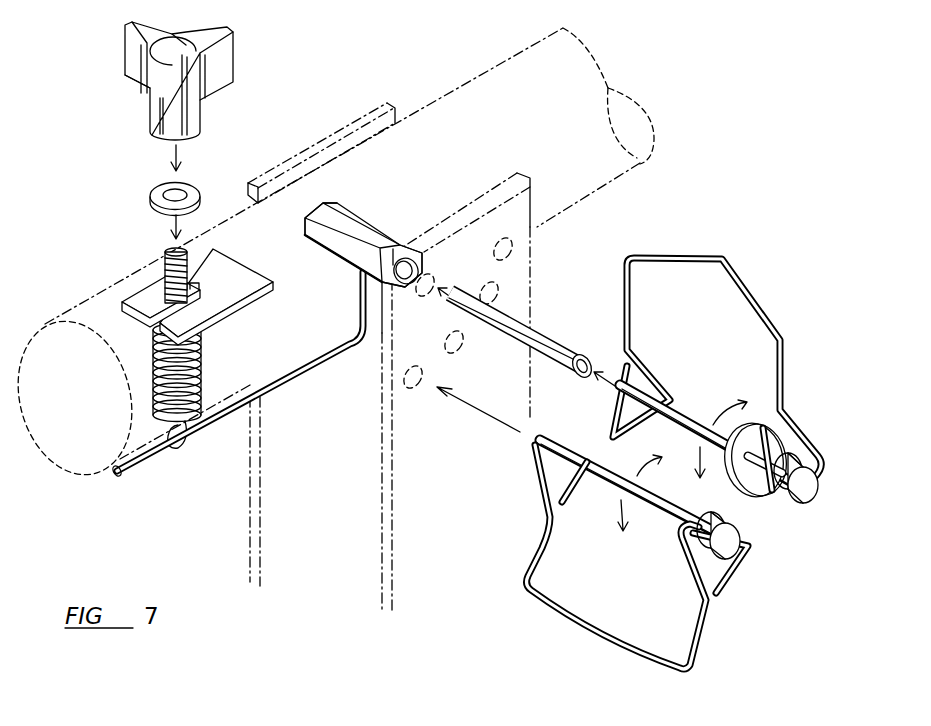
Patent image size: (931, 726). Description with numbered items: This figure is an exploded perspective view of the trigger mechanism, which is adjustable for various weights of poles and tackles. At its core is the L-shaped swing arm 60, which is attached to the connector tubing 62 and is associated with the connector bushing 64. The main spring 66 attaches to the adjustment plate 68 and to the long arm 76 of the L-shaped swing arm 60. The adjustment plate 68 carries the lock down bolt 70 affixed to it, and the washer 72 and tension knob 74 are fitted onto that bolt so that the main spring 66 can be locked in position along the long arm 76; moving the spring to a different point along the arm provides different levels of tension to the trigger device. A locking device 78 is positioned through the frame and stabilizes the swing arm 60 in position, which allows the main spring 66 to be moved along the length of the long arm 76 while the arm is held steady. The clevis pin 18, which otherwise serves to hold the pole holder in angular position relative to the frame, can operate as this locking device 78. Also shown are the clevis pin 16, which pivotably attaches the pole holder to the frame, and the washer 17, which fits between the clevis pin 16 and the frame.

The L-shaped swing arm 60 is at (302, 372).
The connector tubing 62 is at (373, 227).
The connector bushing 64 is at (547, 342).
The main spring 66 is at (150, 340).
The adjustment plate 68 is at (147, 300).
The lock down bolt 70 is at (163, 246).
The washer 72 is at (160, 182).
The tension knob 74 is at (218, 68).
The long arm 76 is at (212, 420).
The locking device 78 is at (587, 463).
The clevis pin 16 is at (692, 420).
The washer 17 is at (742, 452).
The clevis pin 18 is at (578, 450).